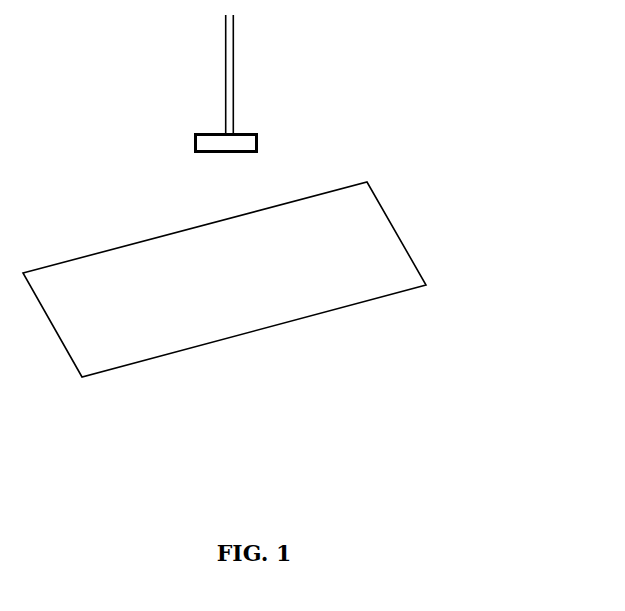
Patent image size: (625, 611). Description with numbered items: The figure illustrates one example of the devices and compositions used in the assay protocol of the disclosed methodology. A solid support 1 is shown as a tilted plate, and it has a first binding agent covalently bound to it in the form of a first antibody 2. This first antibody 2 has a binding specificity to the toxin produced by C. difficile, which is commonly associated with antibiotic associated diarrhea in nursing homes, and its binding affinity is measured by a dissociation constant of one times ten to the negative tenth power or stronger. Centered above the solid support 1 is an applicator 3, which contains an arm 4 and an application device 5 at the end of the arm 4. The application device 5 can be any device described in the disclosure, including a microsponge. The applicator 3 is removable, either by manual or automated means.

The solid support 1 is at (460, 189).
The first antibody (Ab1) 2 is at (227, 317).
The applicator 3 is at (218, 83).
The arm 4 is at (205, 34).
The application device 5 is at (181, 128).